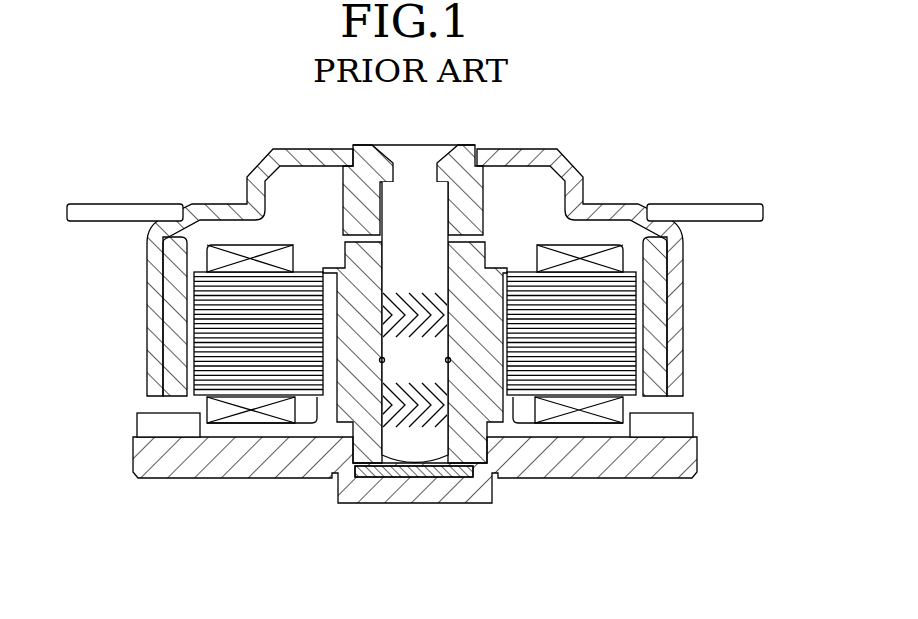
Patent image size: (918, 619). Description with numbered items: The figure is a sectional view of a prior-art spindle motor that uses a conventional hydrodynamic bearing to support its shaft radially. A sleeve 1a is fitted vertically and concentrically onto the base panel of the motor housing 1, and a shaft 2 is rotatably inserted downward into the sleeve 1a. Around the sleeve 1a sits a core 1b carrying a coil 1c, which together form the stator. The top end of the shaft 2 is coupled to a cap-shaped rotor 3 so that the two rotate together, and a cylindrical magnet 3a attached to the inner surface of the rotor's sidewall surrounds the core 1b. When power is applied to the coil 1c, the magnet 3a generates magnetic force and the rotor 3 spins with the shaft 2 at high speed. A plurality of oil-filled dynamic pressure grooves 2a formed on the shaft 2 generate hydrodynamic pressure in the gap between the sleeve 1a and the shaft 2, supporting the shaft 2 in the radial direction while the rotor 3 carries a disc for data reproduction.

The motor housing 1 is at (210, 482).
The sleeve 1a is at (337, 392).
The core 1b is at (240, 347).
The coil 1c is at (217, 255).
The shaft 2 is at (402, 443).
The dynamic pressure grooves 2a is at (418, 422).
The rotor 3 is at (212, 204).
The magnet 3a is at (173, 308).